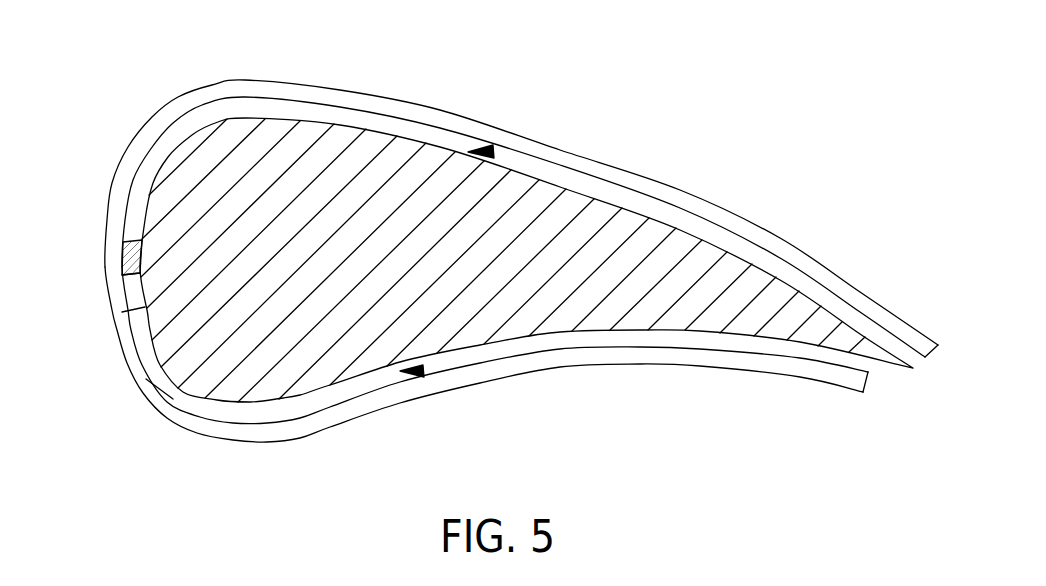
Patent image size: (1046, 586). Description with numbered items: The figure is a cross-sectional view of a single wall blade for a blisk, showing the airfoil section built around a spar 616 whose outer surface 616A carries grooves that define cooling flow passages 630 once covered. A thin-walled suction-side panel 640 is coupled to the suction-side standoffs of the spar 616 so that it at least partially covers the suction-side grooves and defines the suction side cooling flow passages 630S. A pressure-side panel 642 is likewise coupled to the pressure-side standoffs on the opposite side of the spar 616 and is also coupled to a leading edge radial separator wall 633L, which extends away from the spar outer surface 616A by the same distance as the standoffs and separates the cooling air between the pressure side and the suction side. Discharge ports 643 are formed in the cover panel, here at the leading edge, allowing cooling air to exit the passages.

The spar 616 is at (575, 198).
The outer surface of the spar 616A is at (122, 312).
The cooling flow passages 630 is at (424, 372).
The suction side cooling flow passages 630S is at (493, 150).
The leading edge radial separator wall 633L is at (122, 241).
The suction-side panel 640 is at (421, 107).
The pressure-side panel 642 is at (566, 358).
The discharge ports 643 is at (158, 392).